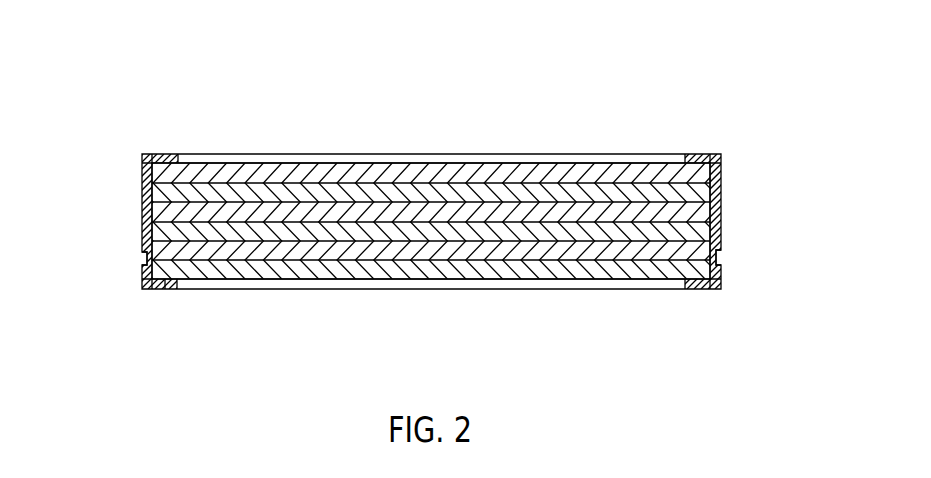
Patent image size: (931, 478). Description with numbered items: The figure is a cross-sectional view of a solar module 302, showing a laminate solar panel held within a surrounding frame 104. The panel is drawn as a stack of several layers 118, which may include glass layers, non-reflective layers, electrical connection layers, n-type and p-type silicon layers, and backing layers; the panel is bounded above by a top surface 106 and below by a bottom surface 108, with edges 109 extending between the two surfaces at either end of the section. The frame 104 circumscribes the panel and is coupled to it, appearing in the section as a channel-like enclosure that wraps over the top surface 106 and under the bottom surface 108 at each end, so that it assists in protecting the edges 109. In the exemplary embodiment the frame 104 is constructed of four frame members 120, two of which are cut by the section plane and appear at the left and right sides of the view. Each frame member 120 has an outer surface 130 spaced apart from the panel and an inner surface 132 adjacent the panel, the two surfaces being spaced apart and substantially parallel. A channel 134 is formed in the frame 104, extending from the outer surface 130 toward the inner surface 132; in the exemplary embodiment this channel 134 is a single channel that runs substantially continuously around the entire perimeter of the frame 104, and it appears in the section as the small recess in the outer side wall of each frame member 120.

The solar module 302 is at (189, 111).
The frame 104 is at (147, 159).
The top surface 106 is at (470, 163).
The bottom surface 108 is at (444, 280).
The edges 109 is at (148, 228).
The layers 118 is at (150, 244).
The frame members 120 is at (146, 190).
The outer surface 130 is at (141, 281).
The inner surface 132 is at (166, 283).
The channel 134 is at (134, 262).